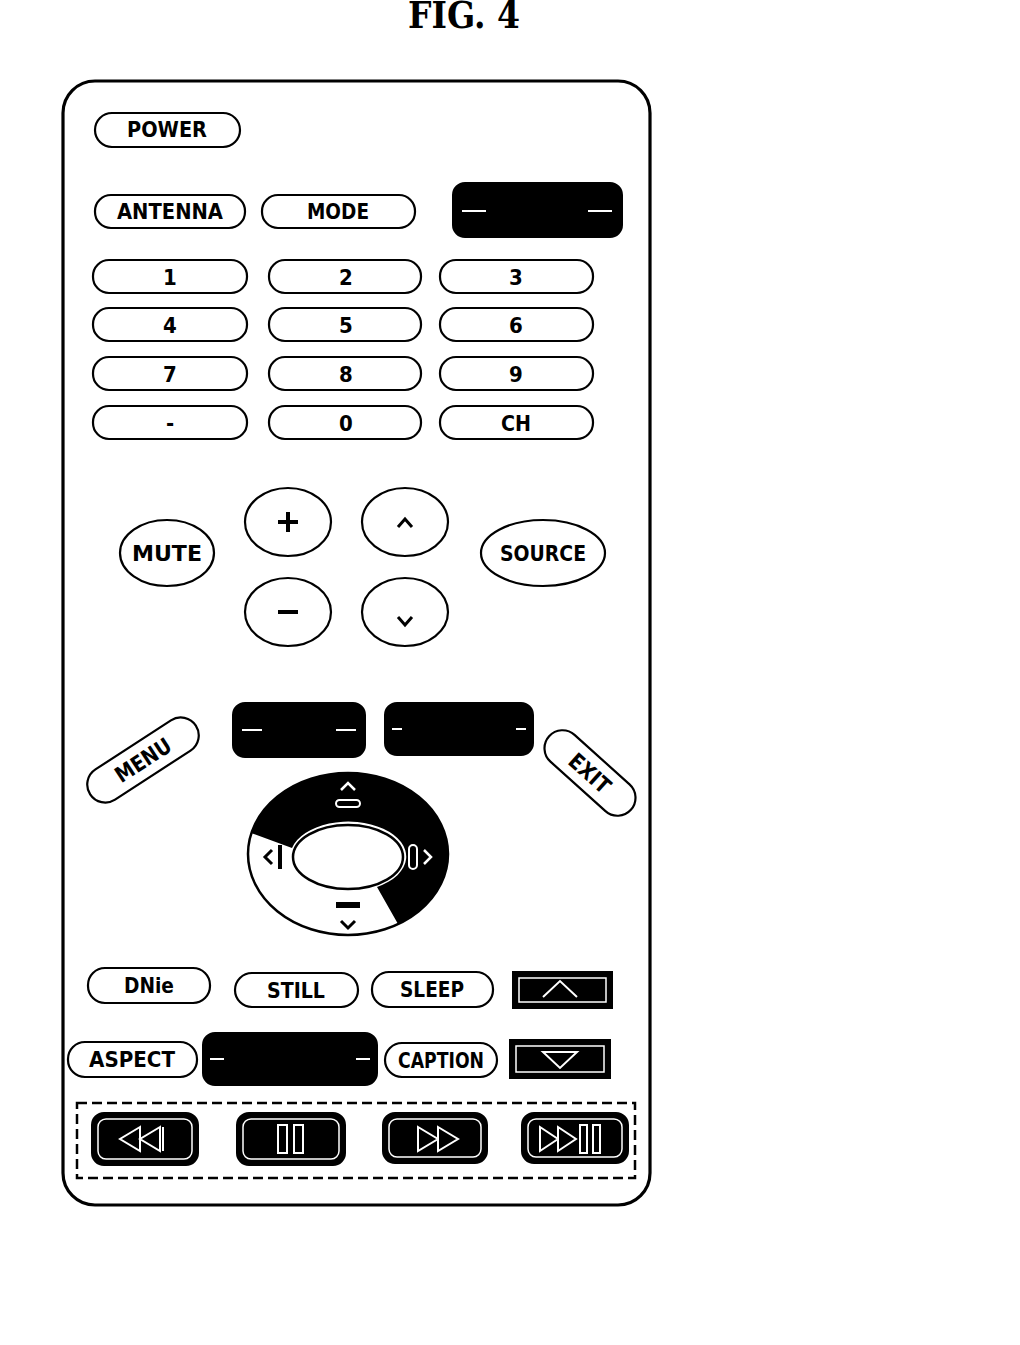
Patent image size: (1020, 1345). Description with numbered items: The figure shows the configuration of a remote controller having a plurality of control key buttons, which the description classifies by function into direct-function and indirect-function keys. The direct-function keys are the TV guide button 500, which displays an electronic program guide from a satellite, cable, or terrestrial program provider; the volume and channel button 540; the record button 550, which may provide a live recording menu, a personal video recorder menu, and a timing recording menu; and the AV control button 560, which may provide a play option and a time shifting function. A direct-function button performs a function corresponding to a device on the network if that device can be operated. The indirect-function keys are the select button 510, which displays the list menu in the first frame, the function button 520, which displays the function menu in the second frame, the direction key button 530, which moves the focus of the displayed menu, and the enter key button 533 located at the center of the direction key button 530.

The TV guide button 500 is at (596, 183).
The select button 510 is at (324, 703).
The function button 520 is at (533, 716).
The direction key button 530 is at (447, 857).
The enter key button 533 is at (380, 884).
The volume and channel button 540 is at (565, 972).
The record button 550 is at (365, 1033).
The AV control button 560 is at (633, 1103).